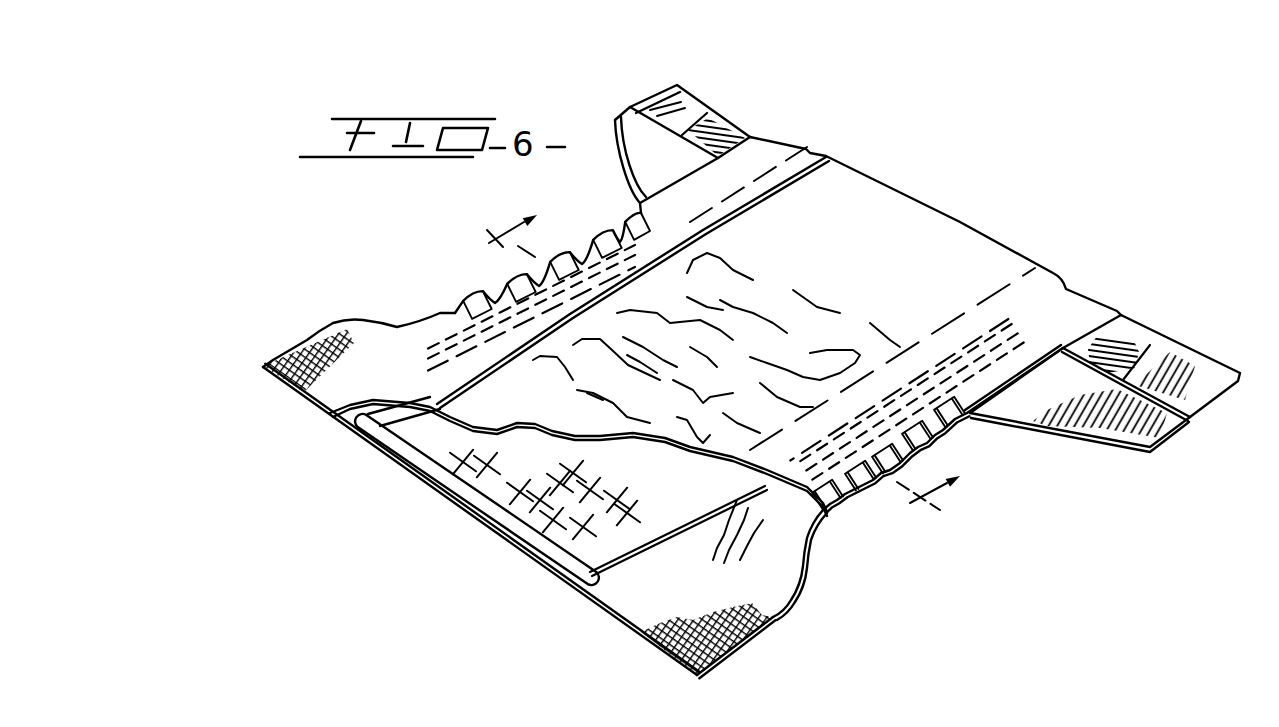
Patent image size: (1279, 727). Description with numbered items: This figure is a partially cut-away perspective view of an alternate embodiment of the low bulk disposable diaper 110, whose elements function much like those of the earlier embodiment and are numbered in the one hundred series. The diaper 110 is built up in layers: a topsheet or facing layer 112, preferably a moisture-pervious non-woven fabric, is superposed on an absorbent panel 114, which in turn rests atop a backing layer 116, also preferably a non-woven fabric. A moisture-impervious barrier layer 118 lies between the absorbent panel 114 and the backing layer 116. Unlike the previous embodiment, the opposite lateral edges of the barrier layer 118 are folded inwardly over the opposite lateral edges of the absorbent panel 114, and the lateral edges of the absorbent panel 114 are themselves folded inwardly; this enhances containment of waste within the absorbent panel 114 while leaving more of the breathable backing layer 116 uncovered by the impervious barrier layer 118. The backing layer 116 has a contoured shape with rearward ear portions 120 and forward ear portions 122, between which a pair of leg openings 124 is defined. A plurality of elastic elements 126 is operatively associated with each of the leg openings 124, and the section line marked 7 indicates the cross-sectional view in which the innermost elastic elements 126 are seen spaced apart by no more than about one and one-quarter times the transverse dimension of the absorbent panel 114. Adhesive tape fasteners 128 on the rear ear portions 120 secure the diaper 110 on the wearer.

The disposable diaper 110 is at (923, 152).
The topsheet 112 is at (707, 362).
The absorbent panel 114 is at (544, 462).
The backing layer 116 is at (607, 634).
The barrier layer 118 is at (592, 588).
The rearward ear portions 120 is at (1166, 481).
The forward ear portions 122 is at (204, 386).
The leg openings 124 is at (400, 260).
The elastic elements 126 is at (390, 356).
The adhesive tape fasteners 128 is at (712, 122).
The cross-sectional view 7 is at (713, 374).